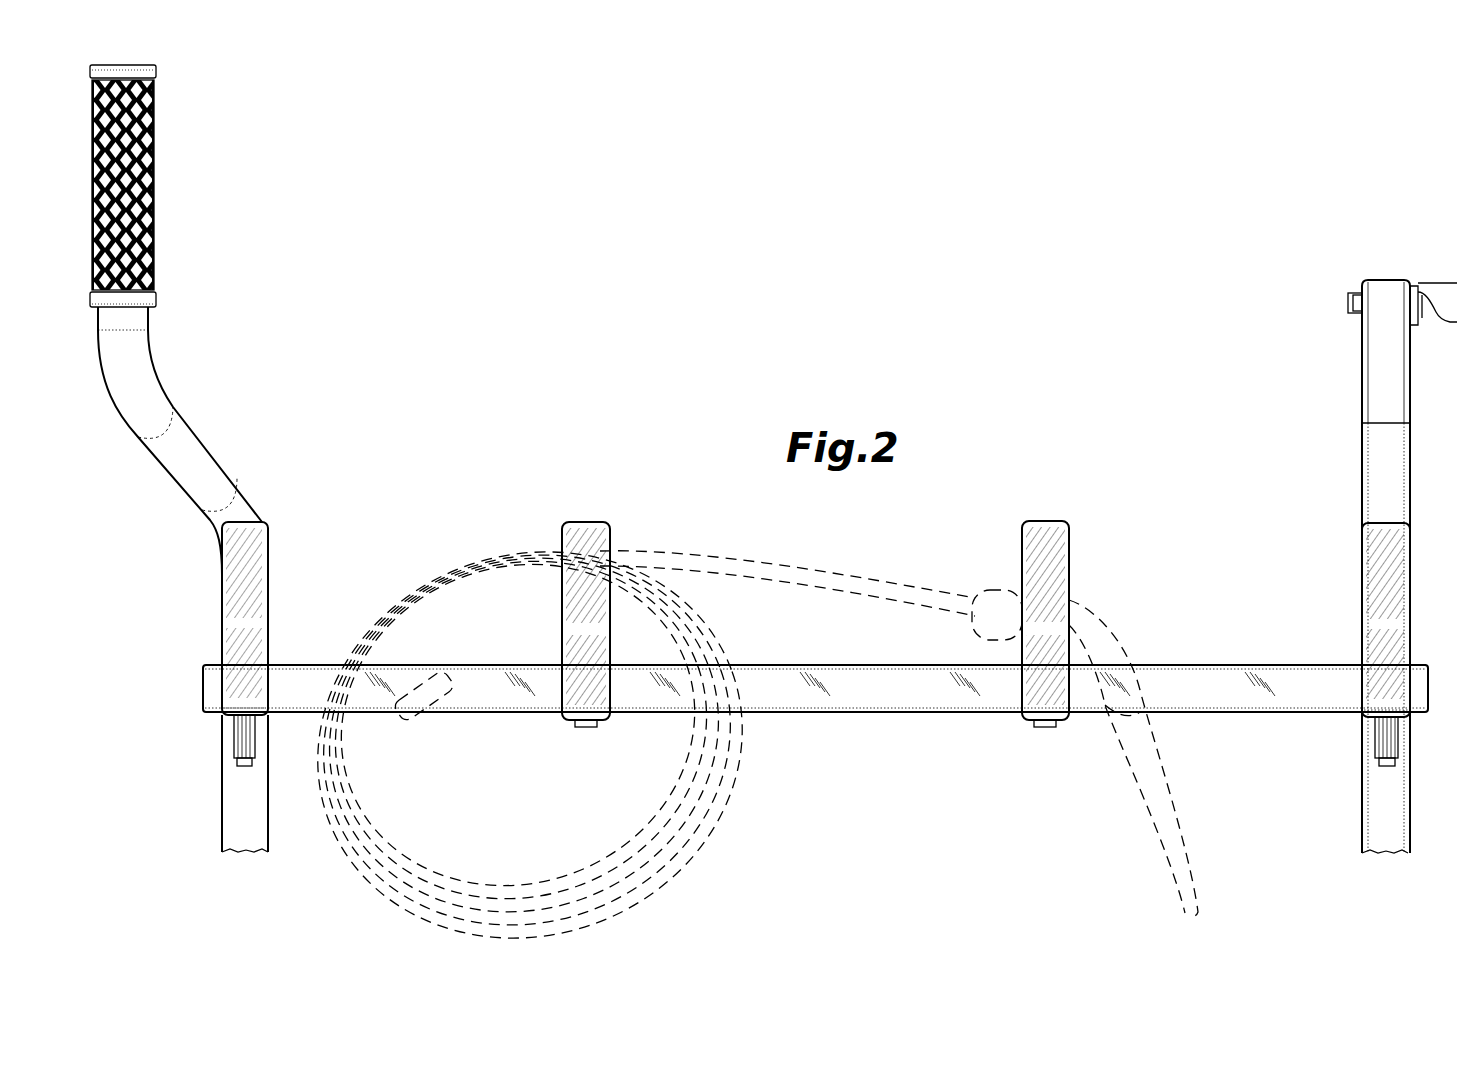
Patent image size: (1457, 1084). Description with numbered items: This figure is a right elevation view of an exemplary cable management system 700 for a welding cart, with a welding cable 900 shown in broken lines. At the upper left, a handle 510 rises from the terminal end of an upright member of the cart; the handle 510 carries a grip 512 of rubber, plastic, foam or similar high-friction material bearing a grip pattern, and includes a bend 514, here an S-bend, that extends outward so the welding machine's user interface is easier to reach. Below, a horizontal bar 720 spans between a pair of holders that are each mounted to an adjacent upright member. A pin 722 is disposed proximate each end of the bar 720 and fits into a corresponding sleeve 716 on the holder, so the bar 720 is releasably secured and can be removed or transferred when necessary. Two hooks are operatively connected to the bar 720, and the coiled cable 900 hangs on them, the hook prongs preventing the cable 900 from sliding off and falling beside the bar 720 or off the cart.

The handle 510 is at (207, 441).
The grip 512 is at (156, 176).
The bend 514 is at (162, 457).
The cable management system 700 is at (815, 700).
The sleeve 716 is at (235, 737).
The bar 720 is at (1200, 662).
The pin 722 is at (245, 764).
The welding cable 900 is at (658, 866).